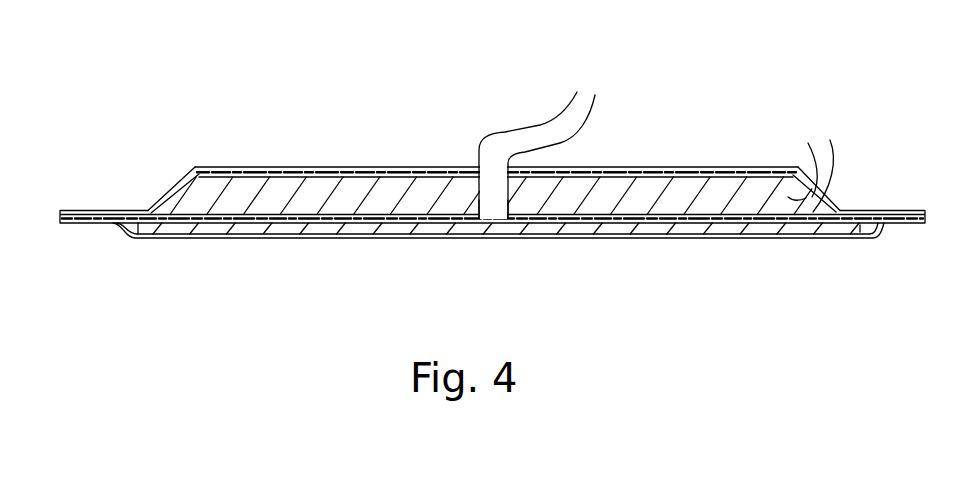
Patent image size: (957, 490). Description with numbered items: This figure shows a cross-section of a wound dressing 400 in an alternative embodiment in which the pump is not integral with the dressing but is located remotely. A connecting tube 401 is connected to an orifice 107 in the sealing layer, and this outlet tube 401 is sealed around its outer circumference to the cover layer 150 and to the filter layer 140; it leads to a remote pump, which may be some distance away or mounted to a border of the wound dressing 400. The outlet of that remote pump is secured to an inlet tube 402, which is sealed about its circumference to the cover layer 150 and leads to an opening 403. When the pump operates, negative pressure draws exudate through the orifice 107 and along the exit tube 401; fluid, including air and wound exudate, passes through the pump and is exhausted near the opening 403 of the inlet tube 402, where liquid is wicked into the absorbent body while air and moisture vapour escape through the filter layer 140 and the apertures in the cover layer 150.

The wound dressing 400 is at (492, 173).
The filter layer 140 is at (212, 187).
The cover layer 150 is at (280, 167).
The orifice 107 is at (497, 232).
The connecting tube 401 is at (570, 134).
The inlet tube 402 is at (836, 158).
The opening 403 is at (797, 209).